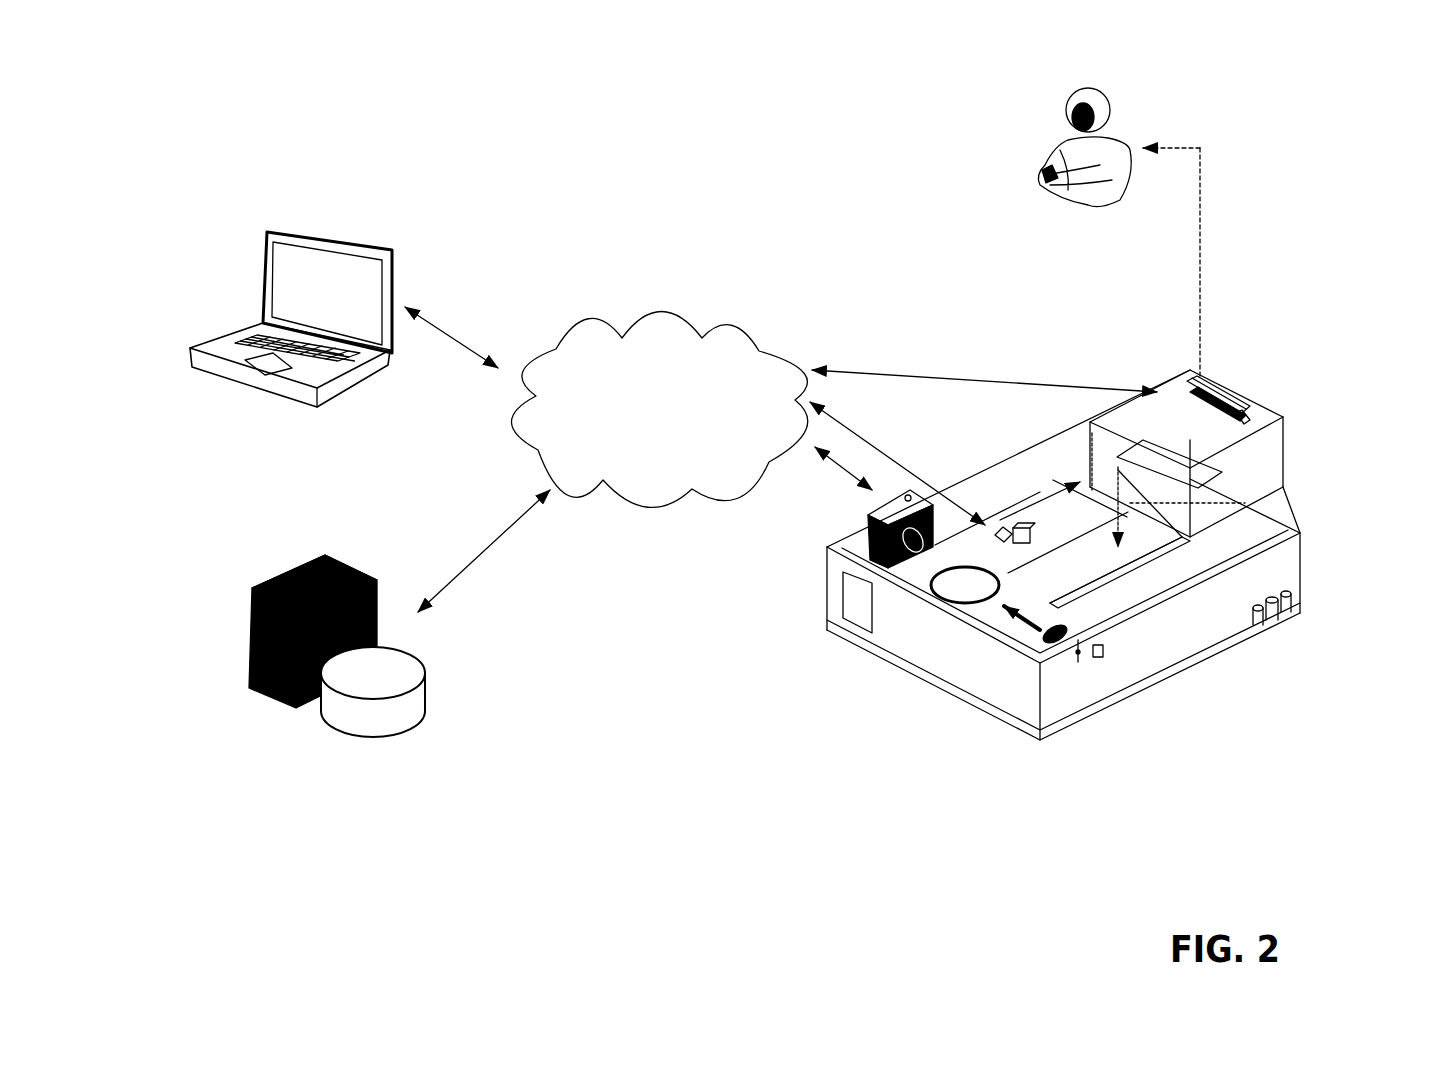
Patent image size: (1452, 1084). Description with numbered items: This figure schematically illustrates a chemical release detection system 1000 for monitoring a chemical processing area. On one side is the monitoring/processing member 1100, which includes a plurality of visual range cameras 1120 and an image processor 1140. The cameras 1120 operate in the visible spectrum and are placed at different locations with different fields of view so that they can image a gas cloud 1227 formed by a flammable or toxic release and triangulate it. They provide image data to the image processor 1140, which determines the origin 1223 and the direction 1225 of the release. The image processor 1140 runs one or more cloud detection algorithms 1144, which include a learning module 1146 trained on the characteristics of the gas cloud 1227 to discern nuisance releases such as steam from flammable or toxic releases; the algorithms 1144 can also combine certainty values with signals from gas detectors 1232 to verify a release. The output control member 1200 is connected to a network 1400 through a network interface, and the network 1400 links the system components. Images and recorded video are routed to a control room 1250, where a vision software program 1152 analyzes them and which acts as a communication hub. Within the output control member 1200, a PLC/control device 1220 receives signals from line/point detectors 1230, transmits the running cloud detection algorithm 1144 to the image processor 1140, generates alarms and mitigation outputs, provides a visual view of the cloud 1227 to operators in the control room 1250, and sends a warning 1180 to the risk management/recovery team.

The chemical release detection system 1000 is at (783, 437).
The monitoring/processing member 1100 is at (763, 511).
The cloud detection algorithms 1144 is at (319, 297).
The learning module 1146 is at (361, 274).
The image processor 1140 is at (268, 619).
The vision software program 1152 is at (843, 602).
The network 1400 is at (659, 410).
The visual range cameras 1120 is at (821, 558).
The warning 1180 is at (1119, 233).
The output control member 1200 is at (1101, 506).
The gas detectors 1232 is at (993, 472).
The gas cloud 1227 is at (892, 625).
The direction 1225 is at (931, 684).
The origin 1223 is at (956, 712).
The line/point detectors 1230 is at (1197, 620).
The control room 1250 is at (1266, 364).
The PLC/control device 1220 is at (1267, 389).